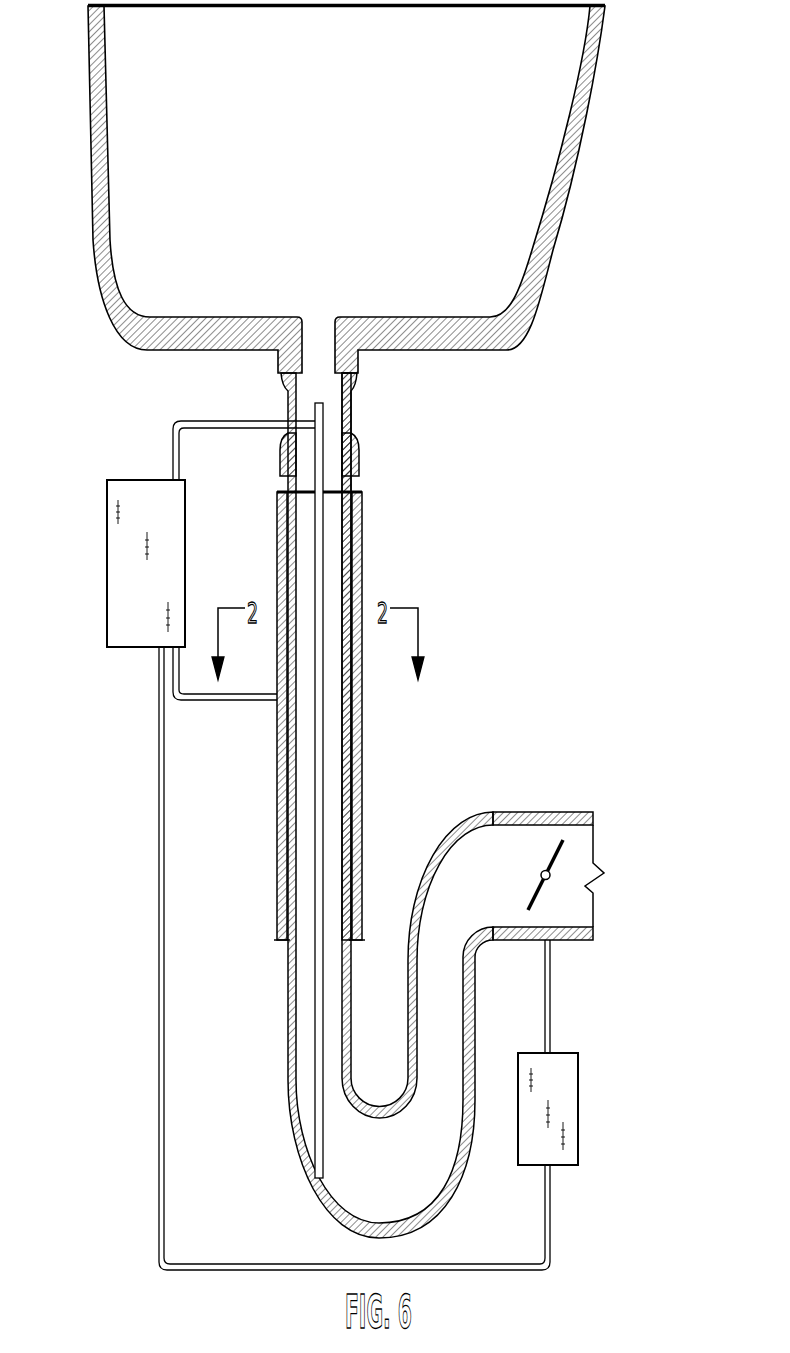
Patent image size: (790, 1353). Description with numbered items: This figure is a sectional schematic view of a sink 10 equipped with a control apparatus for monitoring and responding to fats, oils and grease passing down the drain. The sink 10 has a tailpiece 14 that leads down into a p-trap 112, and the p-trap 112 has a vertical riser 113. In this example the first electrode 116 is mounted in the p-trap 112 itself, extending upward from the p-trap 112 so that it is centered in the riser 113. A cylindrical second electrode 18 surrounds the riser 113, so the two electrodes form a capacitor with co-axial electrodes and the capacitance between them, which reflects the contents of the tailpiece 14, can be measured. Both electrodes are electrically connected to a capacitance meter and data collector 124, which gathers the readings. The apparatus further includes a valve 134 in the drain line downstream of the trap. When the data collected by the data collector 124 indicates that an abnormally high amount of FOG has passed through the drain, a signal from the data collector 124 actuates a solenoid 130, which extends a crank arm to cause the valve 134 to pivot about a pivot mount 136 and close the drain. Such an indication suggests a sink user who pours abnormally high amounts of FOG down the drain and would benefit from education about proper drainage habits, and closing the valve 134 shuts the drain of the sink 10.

The sink 10 is at (580, 173).
The tailpiece 14 is at (352, 413).
The second electrode 18 is at (358, 512).
The p-trap 112 is at (552, 812).
The riser 113 is at (350, 787).
The first electrode 116 is at (322, 473).
The data collector 124 is at (140, 633).
The solenoid 130 is at (572, 1098).
The valve 134 is at (528, 900).
The pivot mount 136 is at (543, 867).